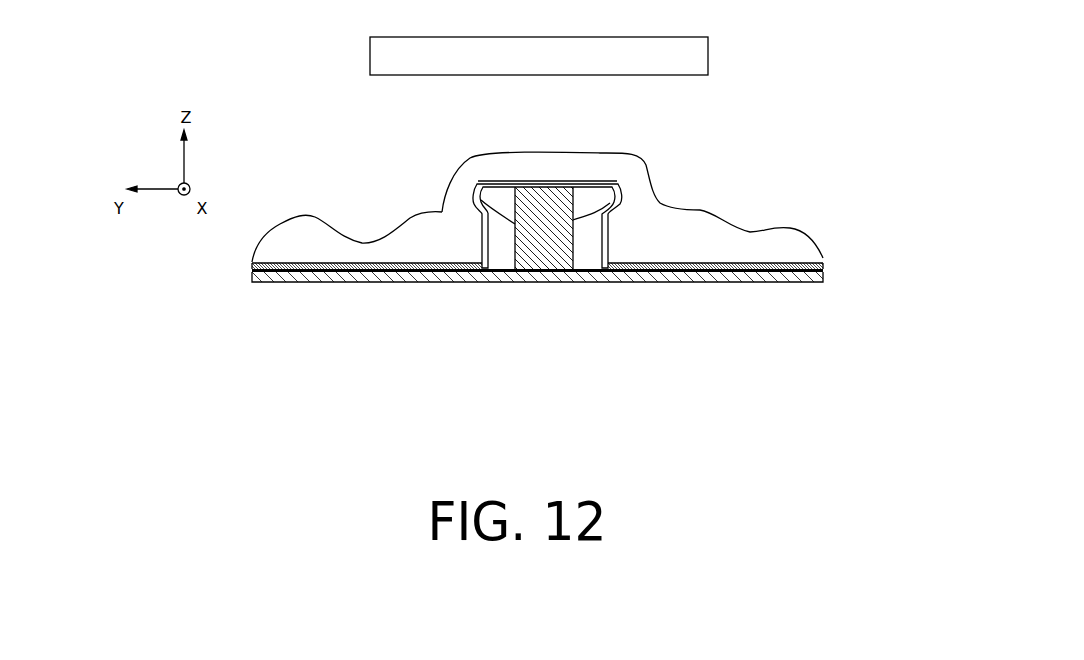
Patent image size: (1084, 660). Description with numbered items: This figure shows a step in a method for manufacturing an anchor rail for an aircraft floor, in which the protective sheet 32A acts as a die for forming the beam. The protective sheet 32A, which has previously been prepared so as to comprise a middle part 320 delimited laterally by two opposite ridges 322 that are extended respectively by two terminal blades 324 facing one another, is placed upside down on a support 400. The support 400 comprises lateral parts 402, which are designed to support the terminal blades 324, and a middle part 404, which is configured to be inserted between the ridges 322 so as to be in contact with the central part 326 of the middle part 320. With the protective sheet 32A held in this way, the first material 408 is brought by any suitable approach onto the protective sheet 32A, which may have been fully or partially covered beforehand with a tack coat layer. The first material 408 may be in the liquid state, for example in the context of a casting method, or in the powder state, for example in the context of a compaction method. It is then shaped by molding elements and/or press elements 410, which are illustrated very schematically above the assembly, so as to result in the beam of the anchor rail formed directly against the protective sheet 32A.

The molding elements and/or press elements 410 is at (390, 57).
The support 400 is at (822, 277).
The lateral parts 402 is at (417, 264).
The terminal blades 324 is at (337, 272).
The protective sheet 32A is at (252, 269).
The middle part 404 is at (547, 233).
The central part 326 is at (578, 183).
The middle part 320 is at (474, 183).
The ridges 322 is at (482, 238).
The first material 408 is at (742, 245).